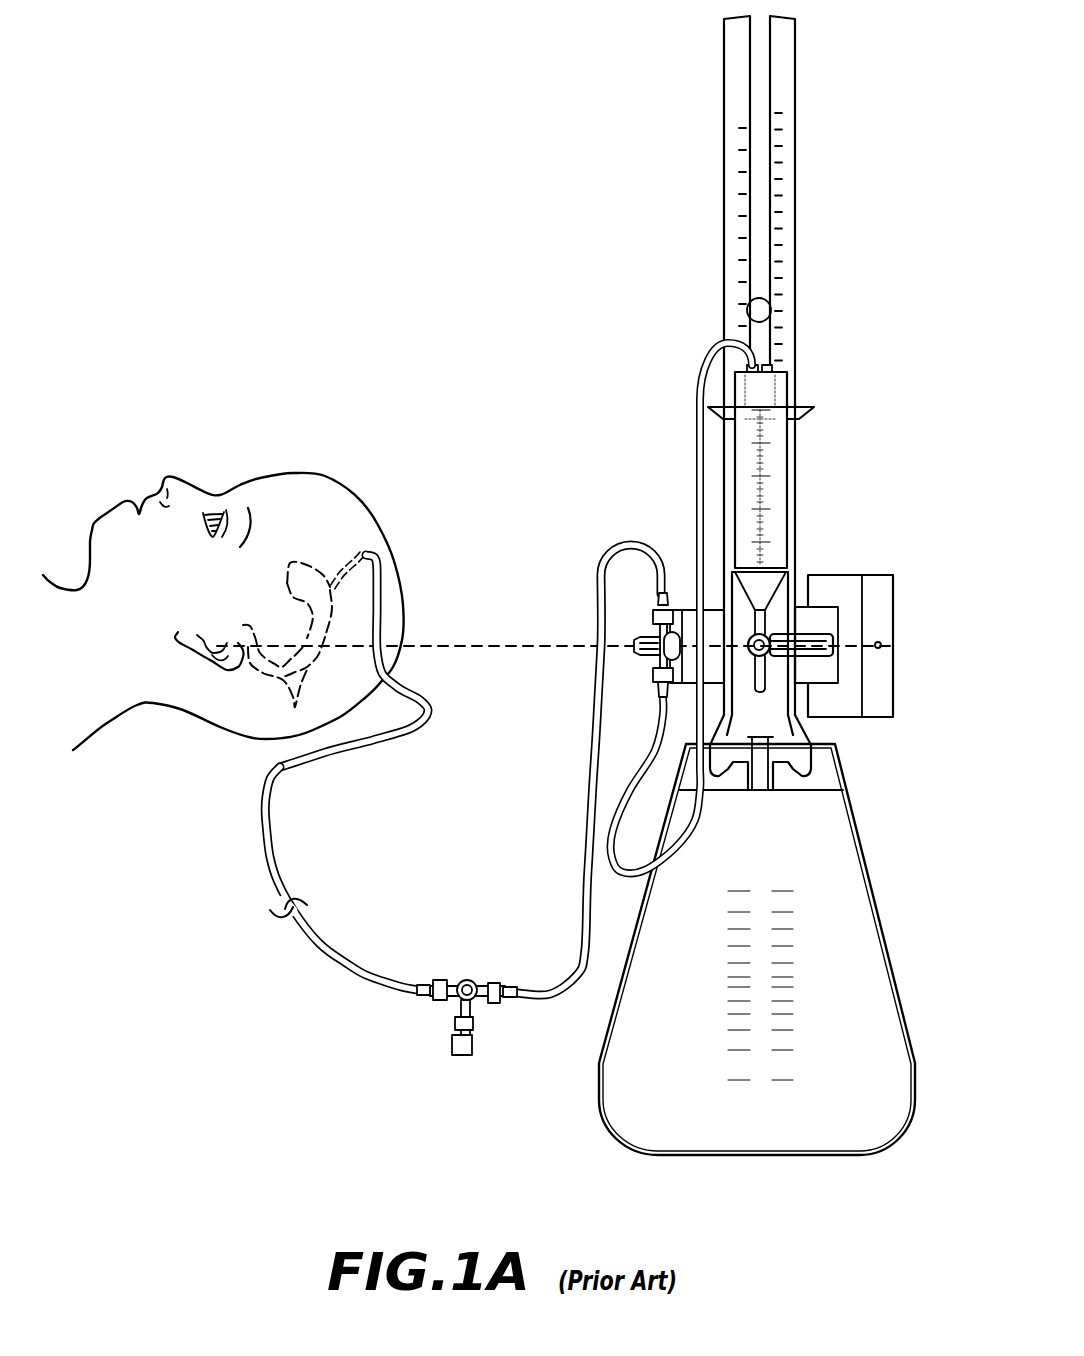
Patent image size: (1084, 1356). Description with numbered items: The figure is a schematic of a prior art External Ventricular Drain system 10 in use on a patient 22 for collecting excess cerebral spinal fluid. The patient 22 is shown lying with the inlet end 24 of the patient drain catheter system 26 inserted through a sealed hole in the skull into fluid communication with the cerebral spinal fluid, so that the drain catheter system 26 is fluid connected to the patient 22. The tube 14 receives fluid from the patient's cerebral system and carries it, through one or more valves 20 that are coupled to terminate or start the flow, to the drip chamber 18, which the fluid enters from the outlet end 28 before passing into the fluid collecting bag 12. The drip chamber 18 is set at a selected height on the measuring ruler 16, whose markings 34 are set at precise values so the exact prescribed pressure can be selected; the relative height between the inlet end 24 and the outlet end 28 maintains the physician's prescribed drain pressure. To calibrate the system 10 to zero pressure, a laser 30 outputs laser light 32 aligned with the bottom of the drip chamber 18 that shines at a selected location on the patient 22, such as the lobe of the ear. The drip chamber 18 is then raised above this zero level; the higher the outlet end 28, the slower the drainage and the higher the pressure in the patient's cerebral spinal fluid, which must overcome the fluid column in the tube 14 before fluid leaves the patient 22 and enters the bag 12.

The External Ventricular Drain (EVD) system 10 is at (455, 122).
The fluid collecting bag 12 is at (840, 877).
The tube 14 is at (340, 967).
The measuring ruler 16 is at (730, 140).
The drip chamber 18 is at (775, 490).
The valves 20 is at (655, 615).
The patient 22 is at (377, 437).
The inlet end 24 is at (362, 552).
The patient drain catheter system 26 is at (398, 615).
The outlet end 28 is at (808, 408).
The laser 30 is at (887, 645).
The laser light 32 is at (539, 650).
The markings 34 is at (730, 203).